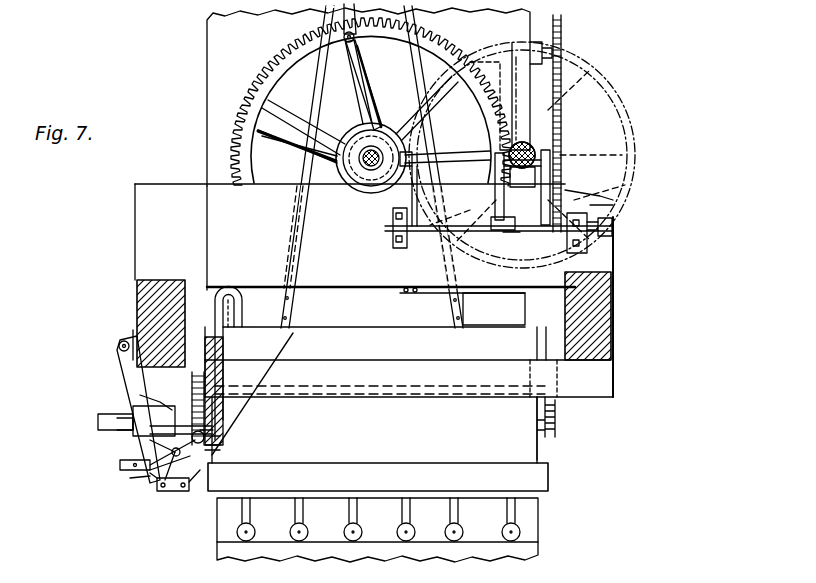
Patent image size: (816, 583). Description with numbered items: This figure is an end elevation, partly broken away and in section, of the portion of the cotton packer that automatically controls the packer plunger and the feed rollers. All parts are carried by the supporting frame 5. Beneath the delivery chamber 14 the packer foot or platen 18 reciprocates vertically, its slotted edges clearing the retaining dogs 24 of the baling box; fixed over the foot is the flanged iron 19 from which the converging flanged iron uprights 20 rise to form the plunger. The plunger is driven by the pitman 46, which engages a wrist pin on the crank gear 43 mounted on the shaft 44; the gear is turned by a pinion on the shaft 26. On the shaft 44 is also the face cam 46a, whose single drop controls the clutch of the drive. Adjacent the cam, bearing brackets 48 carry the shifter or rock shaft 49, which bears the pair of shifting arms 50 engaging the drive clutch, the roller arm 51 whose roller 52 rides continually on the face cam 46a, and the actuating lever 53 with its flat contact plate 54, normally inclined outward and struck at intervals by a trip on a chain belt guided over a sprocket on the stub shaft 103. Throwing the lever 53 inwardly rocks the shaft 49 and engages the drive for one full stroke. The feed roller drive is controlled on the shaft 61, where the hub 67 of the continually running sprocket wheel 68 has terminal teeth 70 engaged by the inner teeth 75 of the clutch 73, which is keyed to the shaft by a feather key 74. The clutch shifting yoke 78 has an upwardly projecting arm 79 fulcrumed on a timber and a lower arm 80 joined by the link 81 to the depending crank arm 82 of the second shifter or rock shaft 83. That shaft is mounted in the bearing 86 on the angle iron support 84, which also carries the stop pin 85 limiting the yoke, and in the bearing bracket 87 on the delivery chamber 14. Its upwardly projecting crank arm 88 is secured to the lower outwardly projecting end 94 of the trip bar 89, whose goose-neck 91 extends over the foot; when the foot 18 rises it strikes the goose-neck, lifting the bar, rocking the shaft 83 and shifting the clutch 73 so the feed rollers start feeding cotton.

The supporting frame 5 is at (150, 240).
The delivery chamber 14 is at (374, 430).
The packer foot or platen 18 is at (274, 337).
The flanged iron 19 is at (391, 308).
The flanged iron uprights 20 is at (316, 98).
The retaining dogs 24 is at (352, 518).
The shaft 26 is at (563, 152).
The crank gear 43 is at (477, 73).
The shaft 44 is at (372, 155).
The pitman 46 is at (360, 58).
The face cam 46a is at (300, 152).
The bearing brackets 48 is at (617, 233).
The shifter or rock shaft 49 is at (520, 232).
The shifting arms 50 is at (551, 205).
The roller arm 51 is at (405, 192).
The roller 52 is at (430, 161).
The actuating lever 53 is at (620, 205).
The flat contact plate 54 is at (600, 178).
The shaft 61 is at (128, 425).
The hub 67 is at (167, 398).
The sprocket wheel 68 is at (213, 432).
The terminal teeth 70 is at (207, 393).
The clutch 73 is at (140, 444).
The feather key 74 is at (100, 418).
The inner teeth 75 is at (123, 393).
The clutch shifting yoke 78 is at (133, 406).
The upwardly projecting arm 79 is at (119, 374).
The lower arm 80 is at (150, 470).
The link 81 is at (172, 490).
The depending crank arm 82 is at (210, 479).
The shifter or rock shaft 83 is at (220, 445).
The angle iron support 84 is at (130, 478).
The stop pin 85 is at (132, 466).
The bearing 86 is at (190, 481).
The bearing bracket 87 is at (220, 450).
The upwardly projecting crank arm 88 is at (150, 474).
The trip bar 89 is at (216, 328).
The goose-neck 91 is at (233, 293).
The lower outwardly projecting end 94 is at (257, 433).
The stub shaft 103 is at (600, 197).